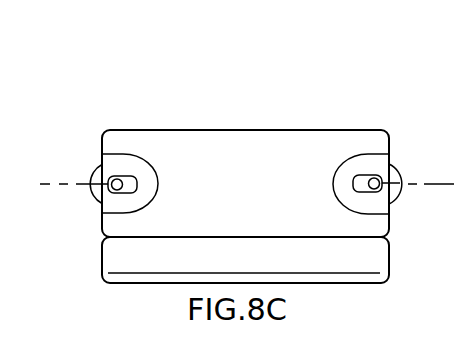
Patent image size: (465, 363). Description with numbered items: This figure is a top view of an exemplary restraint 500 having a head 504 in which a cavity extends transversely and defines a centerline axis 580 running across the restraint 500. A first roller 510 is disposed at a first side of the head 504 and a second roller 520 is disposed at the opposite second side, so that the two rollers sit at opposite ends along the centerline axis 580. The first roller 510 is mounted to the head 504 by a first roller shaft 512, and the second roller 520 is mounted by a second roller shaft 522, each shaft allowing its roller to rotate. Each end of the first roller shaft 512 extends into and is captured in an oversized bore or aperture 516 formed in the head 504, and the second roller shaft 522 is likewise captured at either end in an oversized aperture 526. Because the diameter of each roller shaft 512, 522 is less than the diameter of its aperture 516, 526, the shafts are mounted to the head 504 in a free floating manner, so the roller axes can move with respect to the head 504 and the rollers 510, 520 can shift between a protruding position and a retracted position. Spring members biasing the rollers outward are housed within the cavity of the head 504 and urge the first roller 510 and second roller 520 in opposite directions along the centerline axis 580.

The restraint 500 is at (86, 69).
The head 504 is at (227, 138).
The first roller 510 is at (97, 173).
The first roller shaft 512 is at (90, 189).
The aperture 516 is at (138, 184).
The second roller 520 is at (398, 172).
The second roller shaft 522 is at (397, 180).
The aperture 526 is at (353, 183).
The centerline axis 580 is at (47, 183).